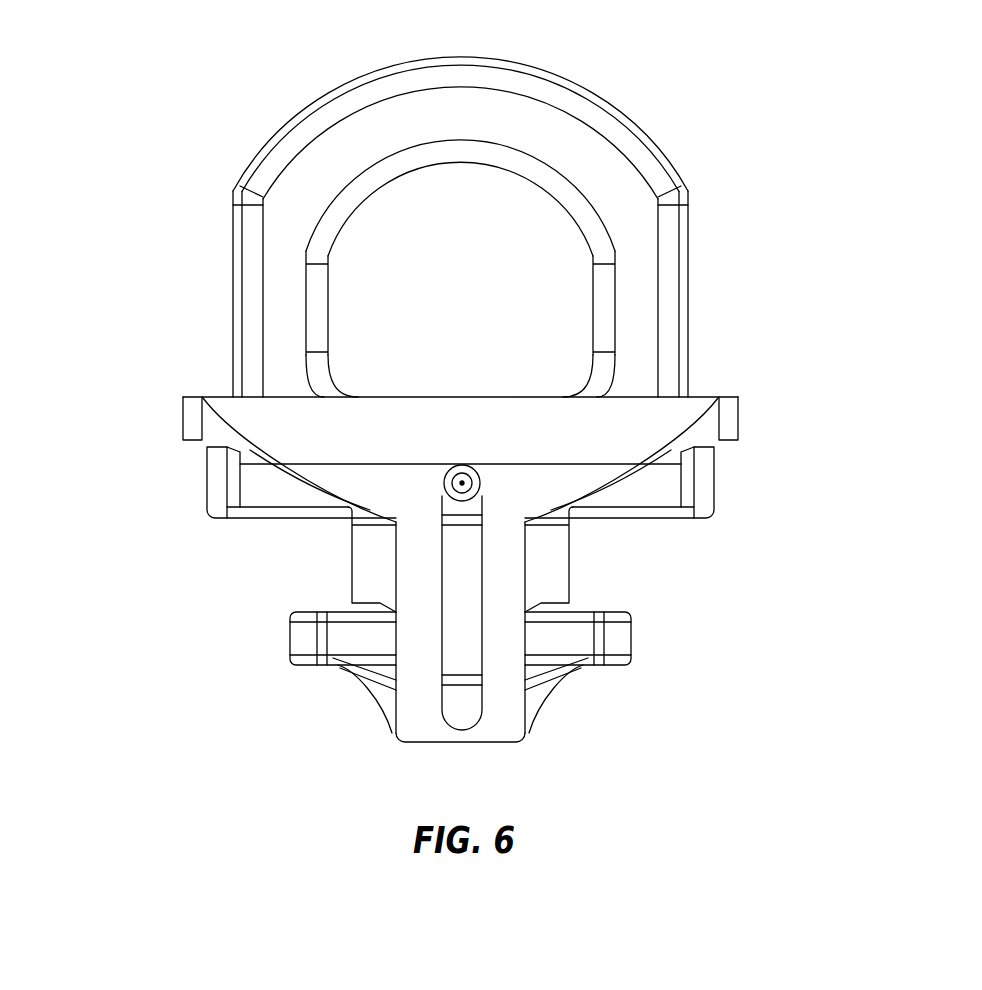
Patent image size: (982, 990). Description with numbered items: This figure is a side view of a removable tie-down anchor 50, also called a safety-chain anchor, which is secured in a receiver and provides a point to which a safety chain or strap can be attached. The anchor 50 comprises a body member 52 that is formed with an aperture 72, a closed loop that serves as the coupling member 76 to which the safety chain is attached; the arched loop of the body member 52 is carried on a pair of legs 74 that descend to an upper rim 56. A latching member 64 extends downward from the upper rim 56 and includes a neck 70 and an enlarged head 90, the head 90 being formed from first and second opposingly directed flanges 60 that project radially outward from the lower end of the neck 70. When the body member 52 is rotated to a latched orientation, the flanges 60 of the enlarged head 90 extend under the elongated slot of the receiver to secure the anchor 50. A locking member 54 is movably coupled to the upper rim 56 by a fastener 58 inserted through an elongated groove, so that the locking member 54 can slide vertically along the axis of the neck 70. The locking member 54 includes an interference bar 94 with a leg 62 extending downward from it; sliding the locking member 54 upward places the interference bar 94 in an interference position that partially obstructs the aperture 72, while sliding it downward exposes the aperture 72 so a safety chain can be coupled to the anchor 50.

The tie-down anchor 50 is at (240, 93).
The body member 52 is at (694, 184).
The locking member 54 is at (171, 392).
The upper rim 56 is at (218, 485).
The fastener 58 is at (461, 485).
The flanges 60 is at (298, 637).
The leg 62 is at (408, 565).
The latching member 64 is at (552, 719).
The neck 70 is at (545, 557).
The aperture 72 is at (398, 294).
The legs 74 is at (233, 240).
The coupling member 76 is at (577, 130).
The enlarged head 90 is at (358, 643).
The interference bar 94 is at (670, 418).